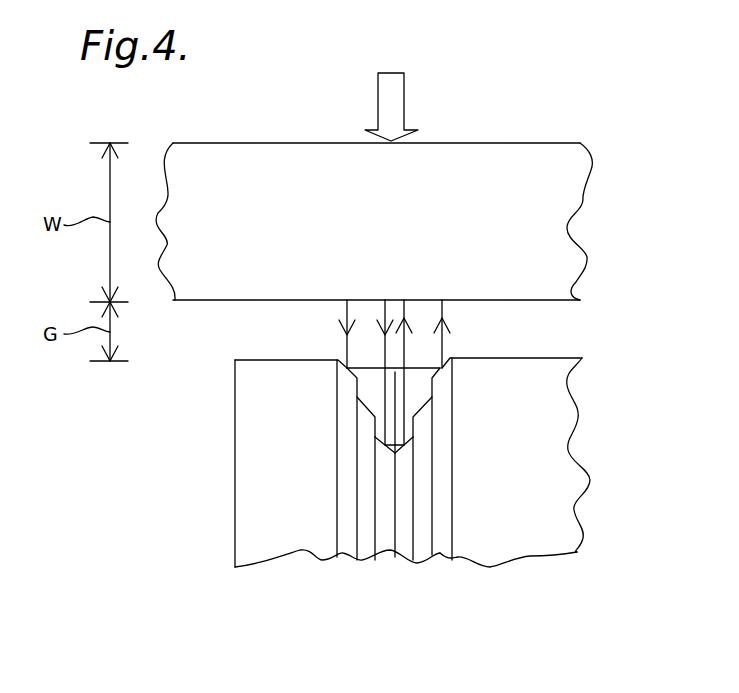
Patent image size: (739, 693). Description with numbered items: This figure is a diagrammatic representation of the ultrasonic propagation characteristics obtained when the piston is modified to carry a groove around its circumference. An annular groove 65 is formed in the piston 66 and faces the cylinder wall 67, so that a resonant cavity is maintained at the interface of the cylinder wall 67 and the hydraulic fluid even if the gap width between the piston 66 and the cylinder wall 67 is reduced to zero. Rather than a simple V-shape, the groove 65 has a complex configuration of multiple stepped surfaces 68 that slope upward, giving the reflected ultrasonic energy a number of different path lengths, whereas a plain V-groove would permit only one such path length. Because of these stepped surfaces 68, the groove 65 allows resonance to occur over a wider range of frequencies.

The annular groove 65 is at (397, 570).
The piston 66 is at (250, 442).
The cylinder wall 67 is at (493, 159).
The stepped surfaces 68 is at (405, 490).